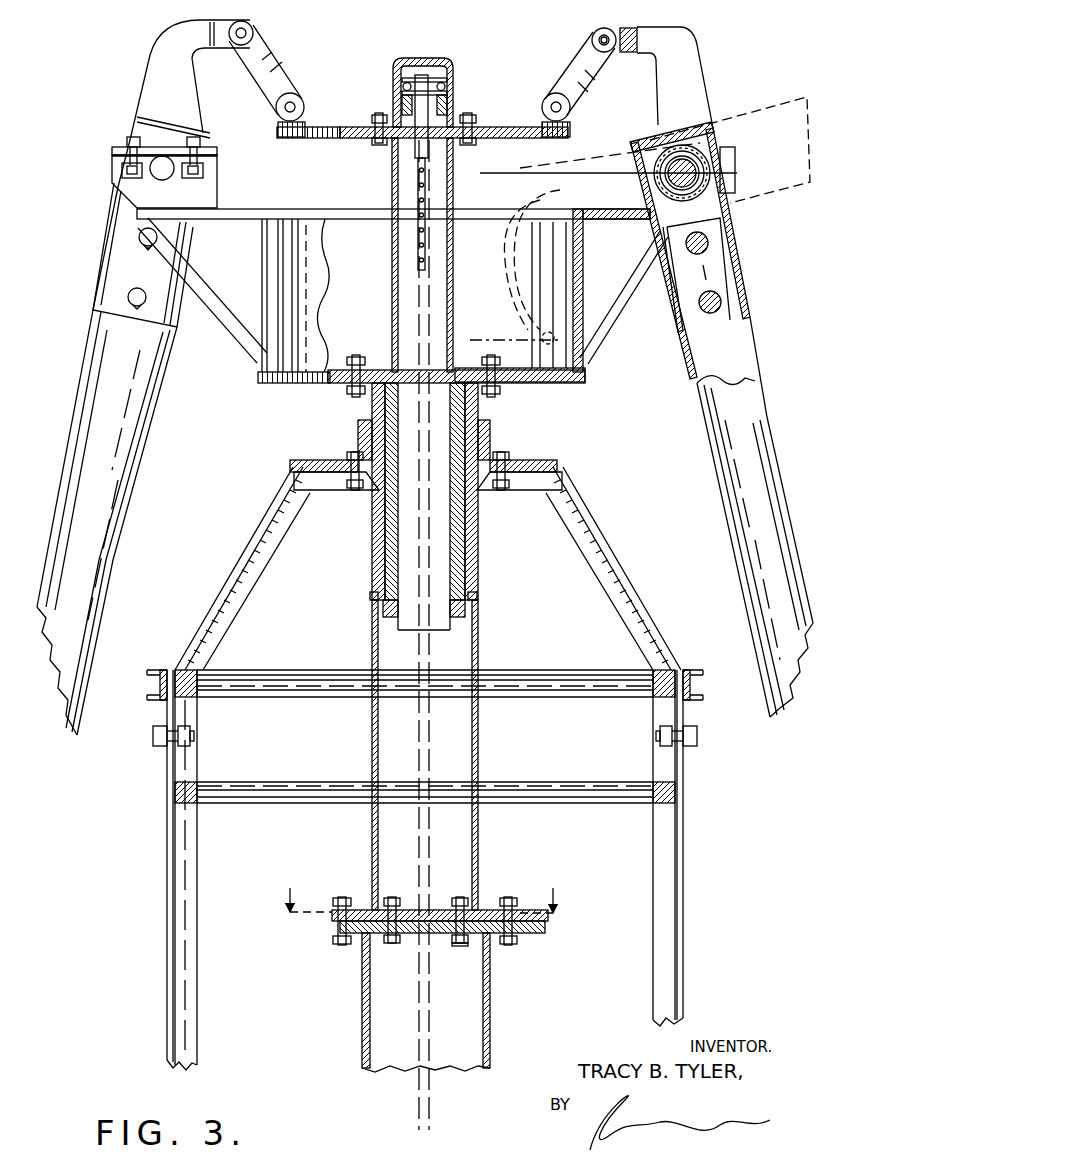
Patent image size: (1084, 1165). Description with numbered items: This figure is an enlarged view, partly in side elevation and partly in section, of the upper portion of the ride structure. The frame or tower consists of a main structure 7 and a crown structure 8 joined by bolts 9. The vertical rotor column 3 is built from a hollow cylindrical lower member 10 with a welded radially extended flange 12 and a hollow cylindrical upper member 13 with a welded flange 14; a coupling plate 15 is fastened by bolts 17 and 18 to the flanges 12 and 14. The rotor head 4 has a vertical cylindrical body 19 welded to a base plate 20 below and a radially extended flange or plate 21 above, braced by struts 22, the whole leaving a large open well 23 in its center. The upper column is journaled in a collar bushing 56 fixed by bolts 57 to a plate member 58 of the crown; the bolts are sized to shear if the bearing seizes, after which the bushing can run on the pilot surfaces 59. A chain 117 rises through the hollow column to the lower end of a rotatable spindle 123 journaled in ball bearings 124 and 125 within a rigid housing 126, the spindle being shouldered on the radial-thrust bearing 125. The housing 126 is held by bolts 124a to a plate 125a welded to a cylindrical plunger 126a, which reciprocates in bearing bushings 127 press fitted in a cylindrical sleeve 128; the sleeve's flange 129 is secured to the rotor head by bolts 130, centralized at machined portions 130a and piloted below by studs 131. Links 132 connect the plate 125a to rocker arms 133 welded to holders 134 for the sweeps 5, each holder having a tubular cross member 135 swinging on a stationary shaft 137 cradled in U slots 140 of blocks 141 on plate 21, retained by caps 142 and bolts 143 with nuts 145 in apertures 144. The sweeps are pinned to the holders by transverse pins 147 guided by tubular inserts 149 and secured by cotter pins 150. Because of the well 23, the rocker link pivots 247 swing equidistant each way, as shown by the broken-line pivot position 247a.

The vertical rotor column 3 is at (478, 1003).
The rotor head 4 is at (278, 388).
The arms or sweeps 5 is at (130, 437).
The main structure 7 is at (683, 828).
The crown structure 8 is at (605, 568).
The bolts 9 is at (698, 740).
The hollow cylindrical lower member 10 is at (362, 1017).
The radially extended flange 12 is at (520, 930).
The hollow cylindrical upper member 13 is at (372, 742).
The radially subtended flange 14 is at (398, 906).
The coupling plate 15 is at (362, 908).
The bolts 17 is at (468, 906).
The bolts 18 is at (462, 935).
The vertical cylindrical body 19 is at (300, 330).
The base plate 20 is at (548, 380).
The radially extended flange or plate 21 is at (236, 218).
The struts 22 is at (224, 320).
The open well 23 is at (340, 235).
The collar bushing 56 is at (490, 428).
The bolts 57 is at (503, 452).
The plate member 58 is at (535, 460).
The surfaces 59 is at (505, 488).
The chain 117 is at (426, 192).
The rotatable spindle 123 is at (447, 84).
The ball bearing 124 is at (400, 90).
The bolts 124a is at (376, 115).
The ball bearing 125 is at (452, 115).
The plate 125a is at (500, 172).
The rigid housing 126 is at (452, 75).
The cylindrical plunger 126a is at (392, 284).
The bearing bushings 127 is at (370, 404).
The cylindrical sleeve 128 is at (462, 528).
The radially extended flange 129 is at (472, 365).
The bolts 130 is at (349, 369).
The contacting portions 130a is at (382, 368).
The studs 131 is at (478, 596).
The links 132 is at (262, 70).
The rocker arms 133 is at (152, 74).
The holders 134 is at (110, 266).
The tubular cross member 135 is at (712, 170).
The stationary shaft 137 is at (158, 172).
The U slots 140 is at (196, 157).
The blocks 141 is at (205, 192).
The caps 142 is at (112, 152).
The bolts 143 is at (127, 140).
The apertures 144 is at (127, 172).
The nuts 145 is at (122, 170).
The removable transverse pins 147 is at (139, 238).
The one piece transverse tubular inserts 149 is at (132, 292).
The cotter pins 150 is at (143, 247).
The rocker link pivots 247 is at (600, 33).
The pivot position 247a is at (545, 235).